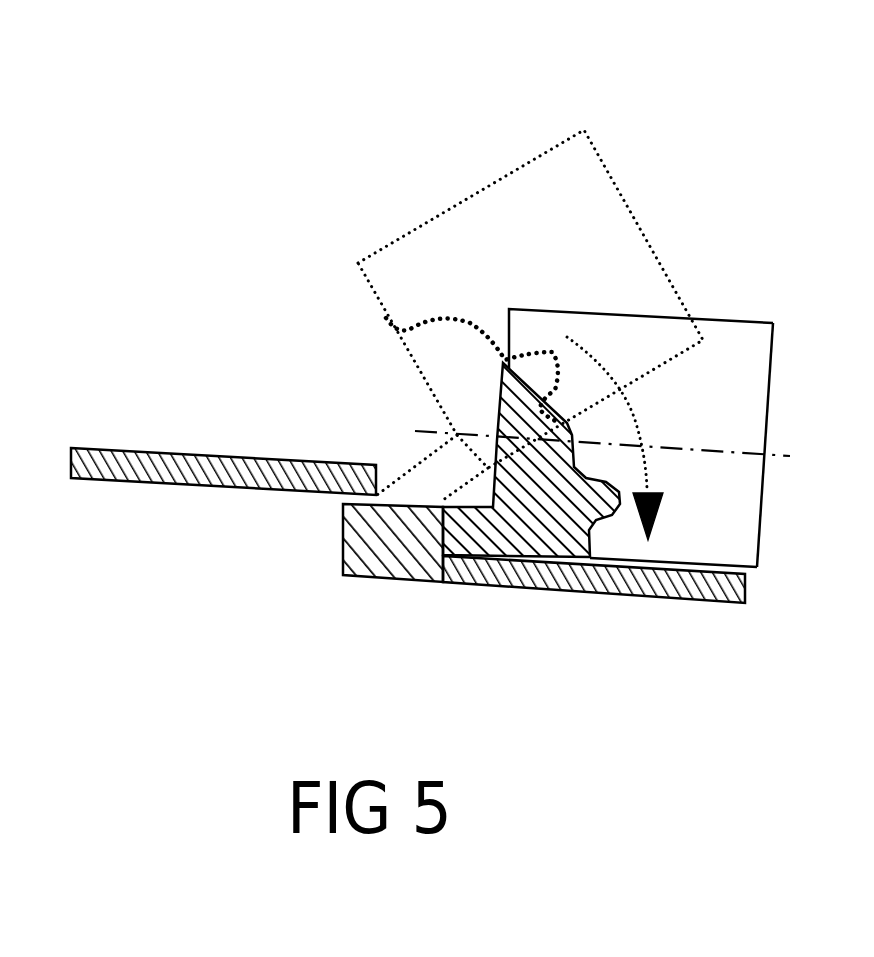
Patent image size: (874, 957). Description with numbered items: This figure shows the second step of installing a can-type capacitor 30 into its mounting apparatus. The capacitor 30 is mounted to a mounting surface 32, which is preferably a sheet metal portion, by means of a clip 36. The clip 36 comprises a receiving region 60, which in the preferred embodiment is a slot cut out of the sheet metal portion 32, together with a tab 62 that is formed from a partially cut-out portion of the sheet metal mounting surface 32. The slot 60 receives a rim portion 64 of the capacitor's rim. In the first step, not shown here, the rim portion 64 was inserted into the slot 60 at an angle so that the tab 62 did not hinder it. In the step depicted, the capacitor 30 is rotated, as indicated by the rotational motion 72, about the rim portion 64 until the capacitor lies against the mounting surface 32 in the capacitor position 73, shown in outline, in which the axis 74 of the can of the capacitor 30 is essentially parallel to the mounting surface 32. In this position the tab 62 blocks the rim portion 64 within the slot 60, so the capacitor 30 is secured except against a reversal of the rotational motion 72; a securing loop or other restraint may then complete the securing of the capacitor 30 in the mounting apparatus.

The capacitor 30 is at (512, 172).
The mounting surface 32 is at (477, 604).
The clip 36 is at (352, 630).
The receiving region 60 is at (373, 450).
The tab 62 is at (298, 463).
The rim portion 64 is at (389, 597).
The rotational motion 72 is at (648, 440).
The capacitor position 73 is at (740, 323).
The axis 74 is at (777, 460).